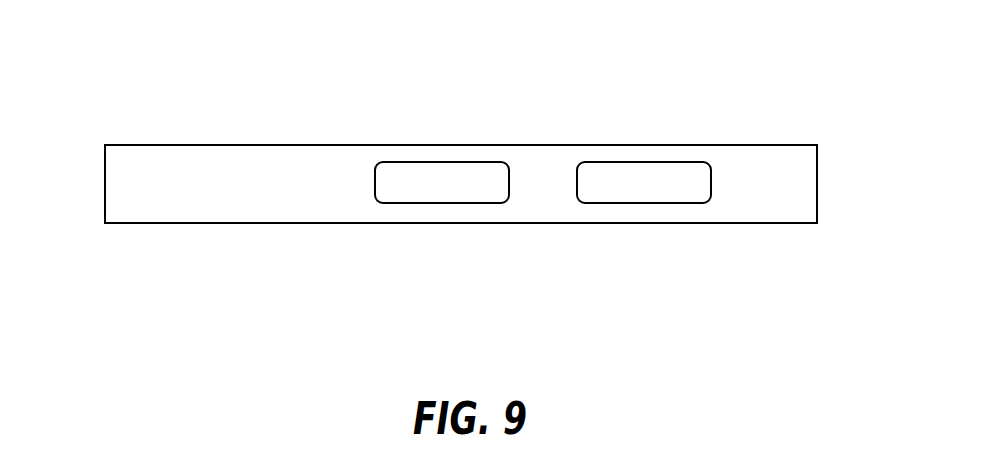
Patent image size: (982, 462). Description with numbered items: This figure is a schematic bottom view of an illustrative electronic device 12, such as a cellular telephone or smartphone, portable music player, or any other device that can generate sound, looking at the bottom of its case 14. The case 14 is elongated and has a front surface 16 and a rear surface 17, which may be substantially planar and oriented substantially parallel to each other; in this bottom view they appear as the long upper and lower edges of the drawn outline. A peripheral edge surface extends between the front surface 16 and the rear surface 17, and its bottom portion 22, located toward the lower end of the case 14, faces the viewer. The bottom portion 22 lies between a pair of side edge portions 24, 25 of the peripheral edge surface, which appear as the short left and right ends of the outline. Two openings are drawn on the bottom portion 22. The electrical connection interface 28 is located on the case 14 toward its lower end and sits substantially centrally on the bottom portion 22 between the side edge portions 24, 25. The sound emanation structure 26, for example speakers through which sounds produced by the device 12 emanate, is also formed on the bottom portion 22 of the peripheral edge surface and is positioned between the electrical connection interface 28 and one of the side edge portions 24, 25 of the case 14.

The electronic device 12 is at (578, 98).
The case 14 is at (369, 129).
The front surface 16 is at (242, 145).
The rear surface 17 is at (265, 225).
The bottom portion 22 is at (185, 208).
The side edge portion 24 is at (105, 176).
The side edge portion 25 is at (817, 179).
The sound emanation structure 26 is at (642, 204).
The electrical connection interface 28 is at (427, 204).